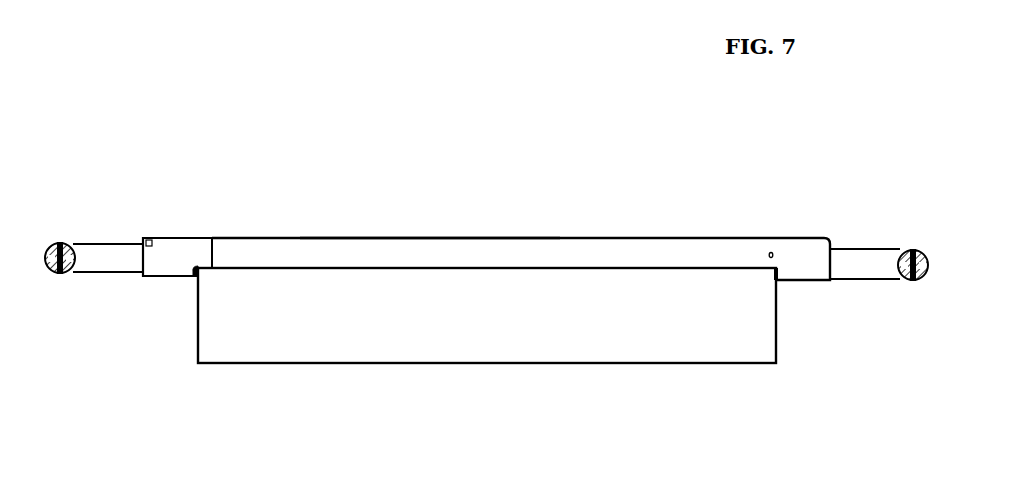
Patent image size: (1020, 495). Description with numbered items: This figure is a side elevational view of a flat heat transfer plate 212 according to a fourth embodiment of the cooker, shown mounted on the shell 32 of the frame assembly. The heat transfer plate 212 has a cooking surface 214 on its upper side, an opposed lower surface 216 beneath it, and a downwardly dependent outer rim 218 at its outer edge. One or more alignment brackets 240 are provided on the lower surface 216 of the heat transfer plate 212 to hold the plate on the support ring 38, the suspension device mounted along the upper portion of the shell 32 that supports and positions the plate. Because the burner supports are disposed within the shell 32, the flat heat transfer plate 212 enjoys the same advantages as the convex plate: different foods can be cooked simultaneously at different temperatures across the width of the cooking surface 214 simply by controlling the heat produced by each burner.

The heat transfer plate 212 is at (423, 236).
The cooking surface 214 is at (477, 236).
The lower surface 216 is at (437, 244).
The alignment bracket 240 is at (152, 280).
The shell 32 is at (196, 312).
The support ring 38 is at (779, 283).
The outer rim 218 is at (833, 284).